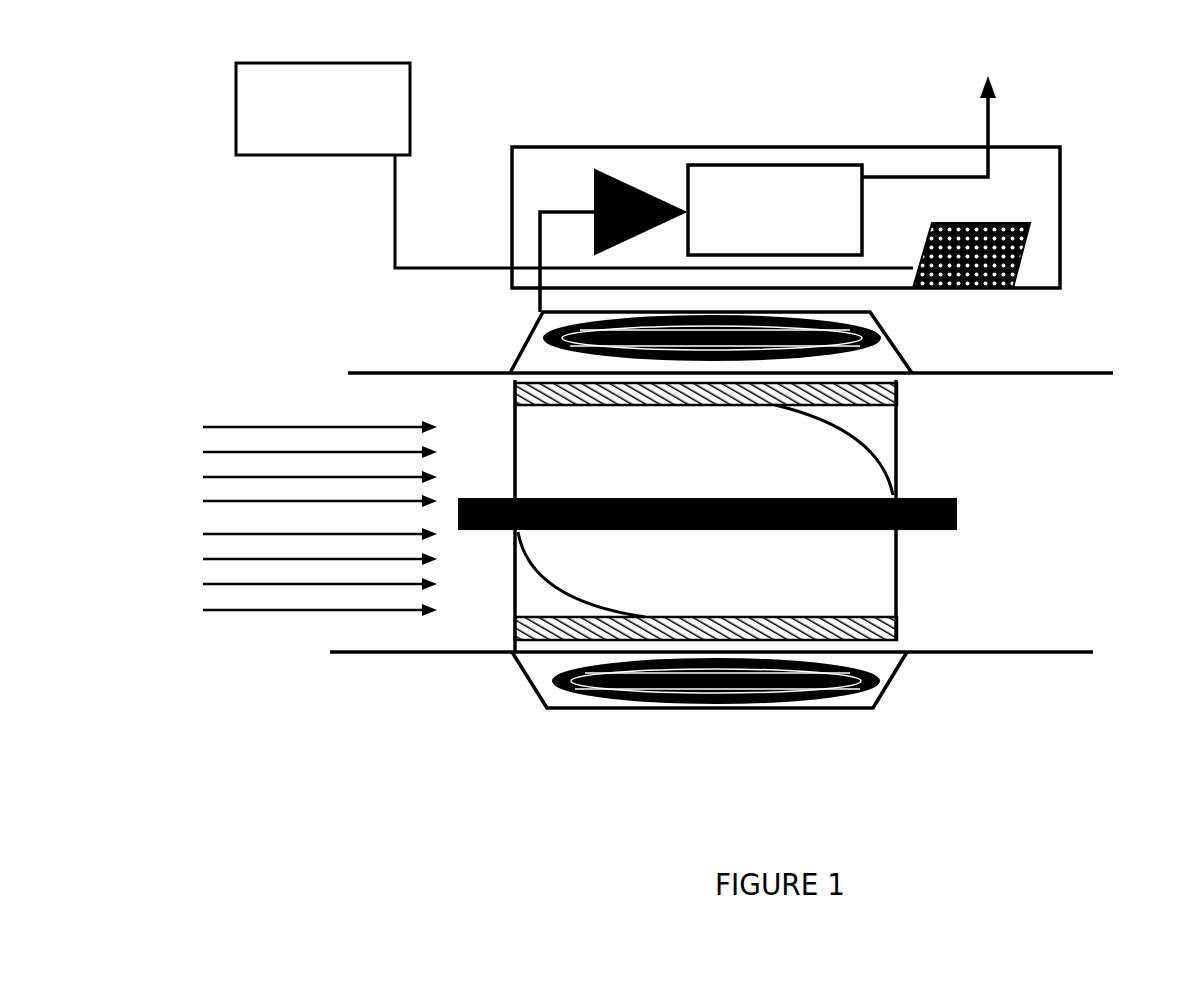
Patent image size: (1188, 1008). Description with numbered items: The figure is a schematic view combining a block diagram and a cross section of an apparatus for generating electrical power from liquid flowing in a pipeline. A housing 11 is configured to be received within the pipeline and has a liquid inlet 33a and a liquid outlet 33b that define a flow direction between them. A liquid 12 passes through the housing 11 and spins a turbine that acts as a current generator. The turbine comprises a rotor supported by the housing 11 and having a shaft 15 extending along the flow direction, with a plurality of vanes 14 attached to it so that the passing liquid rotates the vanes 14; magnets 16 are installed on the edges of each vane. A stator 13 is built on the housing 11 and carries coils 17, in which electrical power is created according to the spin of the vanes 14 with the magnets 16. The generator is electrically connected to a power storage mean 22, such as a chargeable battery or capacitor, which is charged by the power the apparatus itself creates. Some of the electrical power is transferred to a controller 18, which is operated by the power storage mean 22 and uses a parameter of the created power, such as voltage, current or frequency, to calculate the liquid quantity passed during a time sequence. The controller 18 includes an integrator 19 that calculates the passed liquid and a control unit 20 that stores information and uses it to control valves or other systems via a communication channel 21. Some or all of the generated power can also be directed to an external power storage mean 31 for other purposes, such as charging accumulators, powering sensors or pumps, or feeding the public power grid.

The housing 11 is at (380, 336).
The liquid 12 is at (290, 438).
The stator 13 is at (730, 726).
The vanes 14 is at (593, 468).
The shaft 15 is at (683, 481).
The magnets 16 is at (894, 617).
The coils 17 is at (887, 340).
The controller 18 is at (498, 176).
The integrator 19 is at (580, 170).
The control unit 20 is at (749, 177).
The communication channel 21 is at (972, 126).
The power storage mean 22 is at (1023, 243).
The external power storage mean 31 is at (236, 120).
The liquid inlet 33a is at (503, 436).
The liquid outlet 33b is at (908, 474).